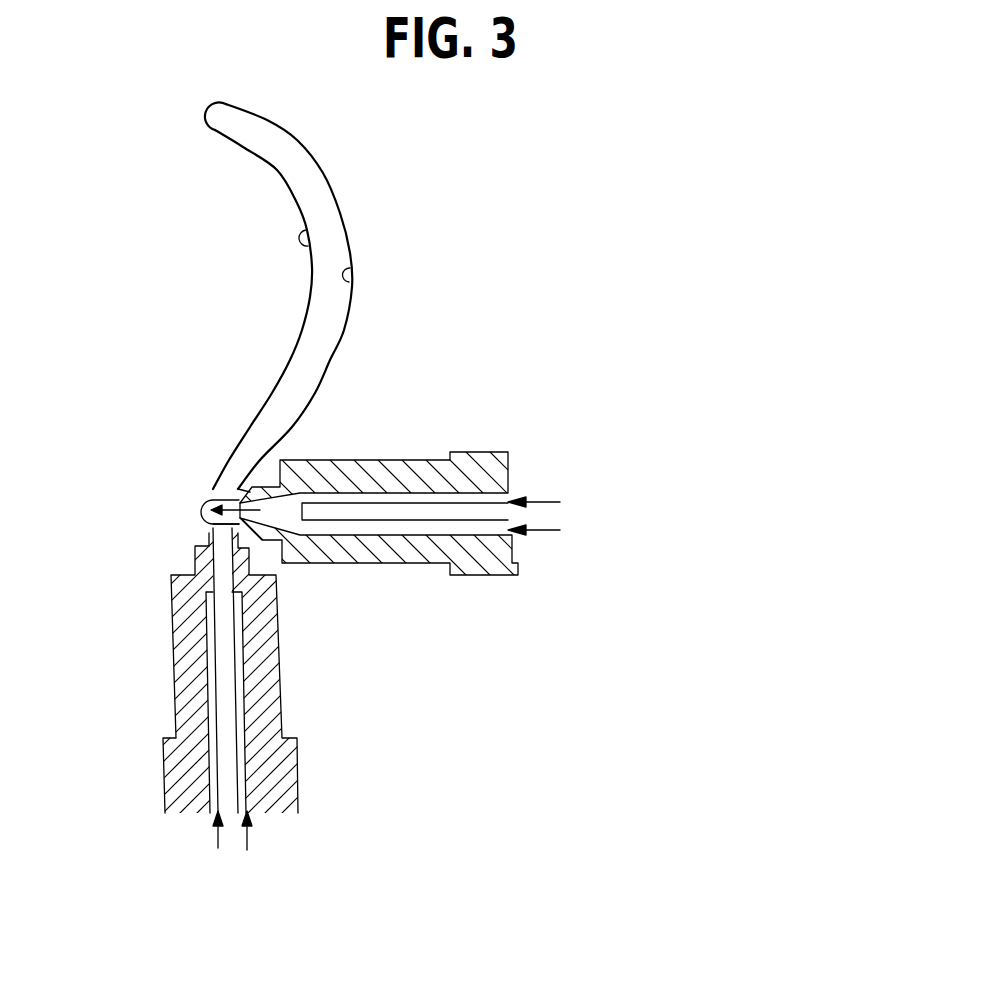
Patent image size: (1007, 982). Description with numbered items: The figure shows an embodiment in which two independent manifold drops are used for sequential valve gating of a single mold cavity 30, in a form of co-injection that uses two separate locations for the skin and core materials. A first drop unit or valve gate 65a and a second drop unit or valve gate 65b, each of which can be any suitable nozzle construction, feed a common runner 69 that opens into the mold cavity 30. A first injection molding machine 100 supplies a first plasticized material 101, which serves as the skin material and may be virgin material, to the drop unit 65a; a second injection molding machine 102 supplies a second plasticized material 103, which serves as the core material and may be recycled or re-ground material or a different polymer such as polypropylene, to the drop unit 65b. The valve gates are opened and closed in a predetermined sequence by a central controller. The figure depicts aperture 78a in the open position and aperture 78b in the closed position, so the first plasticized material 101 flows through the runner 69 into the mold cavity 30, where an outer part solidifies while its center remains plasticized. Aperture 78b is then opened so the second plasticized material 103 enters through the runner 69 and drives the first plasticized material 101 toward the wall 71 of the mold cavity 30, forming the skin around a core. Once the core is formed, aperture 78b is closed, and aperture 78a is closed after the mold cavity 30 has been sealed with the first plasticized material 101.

The mold cavity 30 is at (313, 139).
The wall of mold cavity 71 is at (305, 228).
The aperture 78a is at (236, 492).
The aperture 78b is at (208, 526).
The runner 69 is at (208, 503).
The drop unit or valve gate 65a is at (456, 437).
The drop unit or valve gate 65b is at (162, 697).
The first plasticized material 101 is at (288, 515).
The second plasticized material 103 is at (248, 773).
The first injection molding machine 100 is at (679, 527).
The second injection molding machine 102 is at (237, 886).